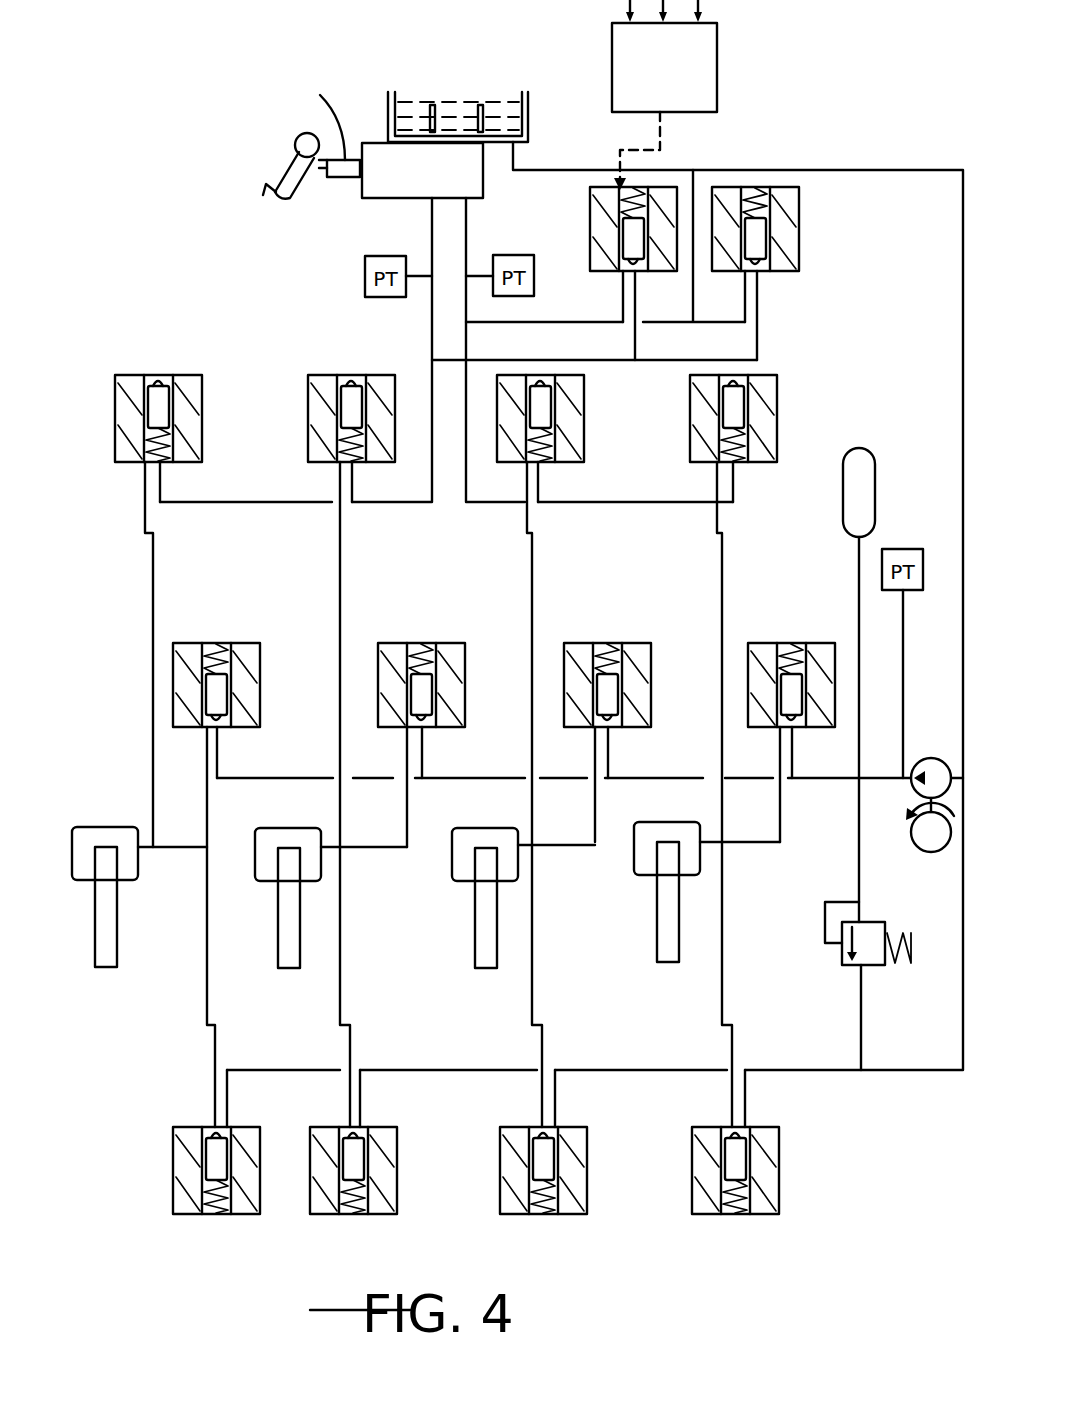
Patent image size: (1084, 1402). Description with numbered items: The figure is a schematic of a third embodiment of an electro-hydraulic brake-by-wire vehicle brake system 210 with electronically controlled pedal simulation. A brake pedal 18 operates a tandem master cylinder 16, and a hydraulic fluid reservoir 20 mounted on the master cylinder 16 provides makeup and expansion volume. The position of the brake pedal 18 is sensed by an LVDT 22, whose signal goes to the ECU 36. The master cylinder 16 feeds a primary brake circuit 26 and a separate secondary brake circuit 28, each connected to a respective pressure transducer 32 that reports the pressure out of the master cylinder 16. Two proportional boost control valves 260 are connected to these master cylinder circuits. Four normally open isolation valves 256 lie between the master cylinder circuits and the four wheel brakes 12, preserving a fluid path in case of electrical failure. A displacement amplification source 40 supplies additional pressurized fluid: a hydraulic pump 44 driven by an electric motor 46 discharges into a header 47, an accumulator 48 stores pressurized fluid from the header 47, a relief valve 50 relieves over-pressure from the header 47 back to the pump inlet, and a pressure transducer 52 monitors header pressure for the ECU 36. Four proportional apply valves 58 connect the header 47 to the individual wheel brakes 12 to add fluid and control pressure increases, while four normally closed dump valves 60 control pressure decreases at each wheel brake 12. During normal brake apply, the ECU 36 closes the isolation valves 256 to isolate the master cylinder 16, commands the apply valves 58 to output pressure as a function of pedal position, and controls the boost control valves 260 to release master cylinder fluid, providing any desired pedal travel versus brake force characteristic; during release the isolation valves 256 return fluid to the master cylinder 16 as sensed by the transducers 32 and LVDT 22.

The wheel brakes 12 is at (100, 827).
The tandem master cylinder 16 is at (390, 192).
The brake pedal 18 is at (283, 175).
The hydraulic fluid reservoir 20 is at (528, 118).
The LVDT 22 is at (333, 160).
The primary brake circuit 26 is at (385, 506).
The secondary brake circuit 28 is at (598, 507).
The pressure transducer 32 is at (365, 277).
The ECU 36 is at (717, 60).
The displacement amplification source 40 is at (912, 462).
The hydraulic pump 44 is at (918, 758).
The electric motor 46 is at (920, 848).
The header 47 is at (755, 780).
The accumulator 48 is at (845, 488).
The relief valve 50 is at (873, 967).
The pressure transducer 52 is at (903, 548).
The proportional apply valves 58 is at (260, 660).
The dump valves 60 is at (173, 1140).
The brake system 210 is at (815, 95).
The isolation valves 256 is at (202, 390).
The proportional boost control valves 260 is at (590, 220).